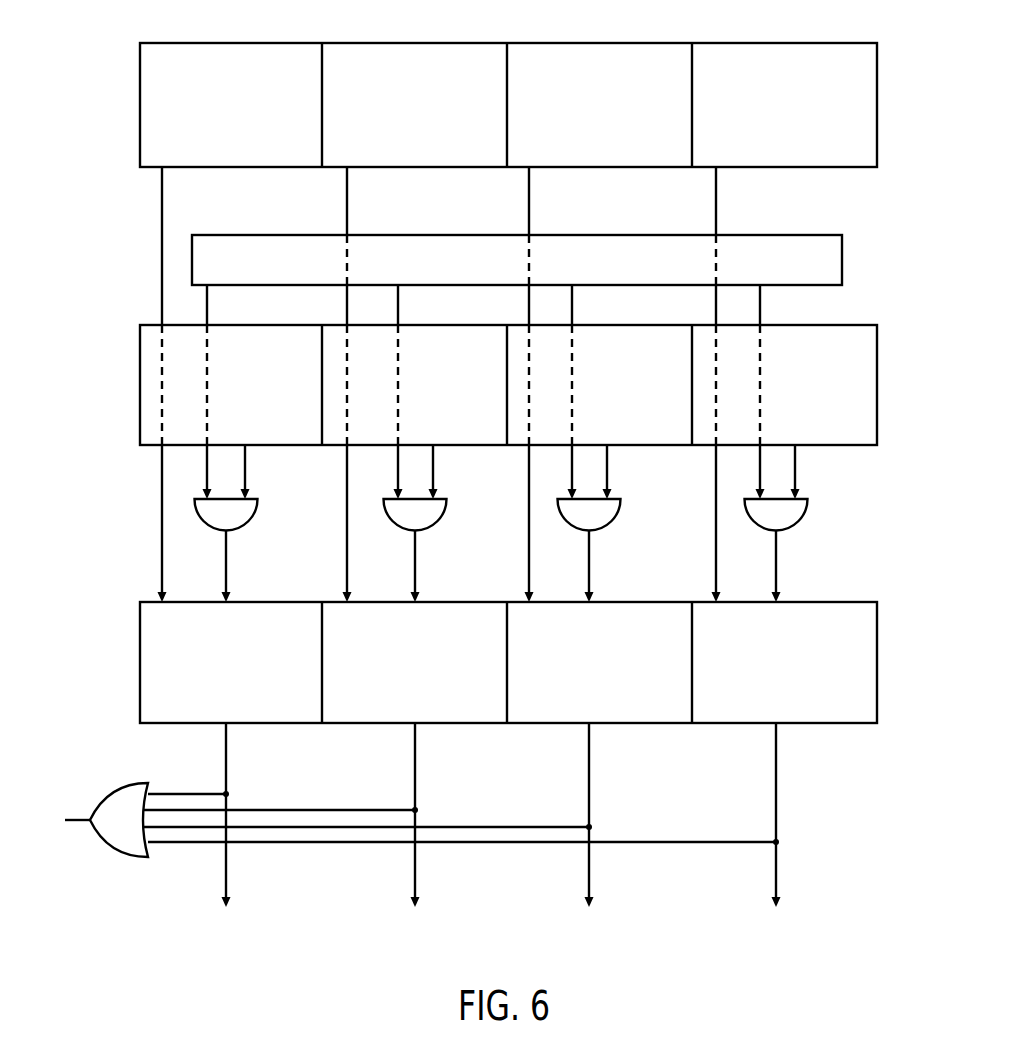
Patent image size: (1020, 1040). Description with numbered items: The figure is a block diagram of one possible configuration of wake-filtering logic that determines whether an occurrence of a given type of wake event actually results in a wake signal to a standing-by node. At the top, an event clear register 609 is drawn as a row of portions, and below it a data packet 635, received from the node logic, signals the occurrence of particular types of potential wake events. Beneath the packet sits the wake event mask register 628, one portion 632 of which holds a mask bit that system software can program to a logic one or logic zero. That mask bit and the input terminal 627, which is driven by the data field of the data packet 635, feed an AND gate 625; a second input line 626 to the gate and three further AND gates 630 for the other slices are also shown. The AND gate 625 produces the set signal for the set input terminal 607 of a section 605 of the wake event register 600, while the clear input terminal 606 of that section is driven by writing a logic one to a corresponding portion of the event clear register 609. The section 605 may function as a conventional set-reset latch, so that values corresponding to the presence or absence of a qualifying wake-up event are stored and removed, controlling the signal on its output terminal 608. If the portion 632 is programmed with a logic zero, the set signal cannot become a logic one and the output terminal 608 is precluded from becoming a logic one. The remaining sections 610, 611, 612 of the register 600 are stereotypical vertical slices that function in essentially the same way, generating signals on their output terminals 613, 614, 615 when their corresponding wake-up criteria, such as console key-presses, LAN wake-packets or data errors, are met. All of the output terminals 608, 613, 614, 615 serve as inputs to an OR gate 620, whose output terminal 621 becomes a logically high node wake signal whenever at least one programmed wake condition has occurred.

The event clear register 609 is at (848, 43).
The data packet 635 is at (517, 260).
The wake event mask register 628 is at (848, 325).
The portion of wake event mask register 632 is at (297, 385).
The clear input terminal 606 is at (162, 578).
The input terminal of AND gate 627 is at (207, 460).
The AND gate input line 626 is at (245, 470).
The AND gate 625 is at (258, 500).
The AND gate 630 is at (826, 494).
The set input terminal 607 is at (226, 578).
The wake event register 600 is at (848, 602).
The section of wake event register 605 is at (228, 664).
The section of wake event register 610 is at (413, 664).
The section of wake event register 611 is at (599, 664).
The section of wake event register 612 is at (787, 664).
The output terminal 608 is at (226, 755).
The output terminal 613 is at (415, 755).
The output terminal 614 is at (589, 755).
The output terminal 615 is at (776, 755).
The OR gate 620 is at (433, 820).
The output terminal 621 is at (78, 819).